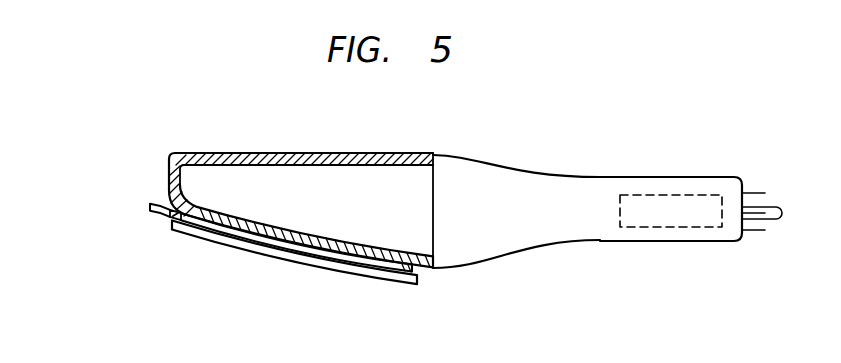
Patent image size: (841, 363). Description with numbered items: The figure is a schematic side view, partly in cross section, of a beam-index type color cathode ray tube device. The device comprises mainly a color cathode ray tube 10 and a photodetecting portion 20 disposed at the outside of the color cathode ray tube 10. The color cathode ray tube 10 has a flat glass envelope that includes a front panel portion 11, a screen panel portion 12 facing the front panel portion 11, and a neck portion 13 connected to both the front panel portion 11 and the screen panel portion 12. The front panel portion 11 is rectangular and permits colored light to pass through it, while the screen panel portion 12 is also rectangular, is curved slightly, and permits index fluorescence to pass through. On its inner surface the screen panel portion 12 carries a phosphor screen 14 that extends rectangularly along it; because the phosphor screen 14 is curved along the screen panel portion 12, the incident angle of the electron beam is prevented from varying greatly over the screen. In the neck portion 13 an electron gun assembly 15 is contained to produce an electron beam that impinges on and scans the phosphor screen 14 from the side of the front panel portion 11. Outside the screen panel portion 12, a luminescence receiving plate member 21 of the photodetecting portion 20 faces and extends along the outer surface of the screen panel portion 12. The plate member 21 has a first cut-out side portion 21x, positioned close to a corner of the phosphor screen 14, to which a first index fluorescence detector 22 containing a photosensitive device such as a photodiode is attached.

The color cathode ray tube 10 is at (545, 166).
The front panel portion 11 is at (370, 160).
The screen panel portion 12 is at (377, 269).
The neck portion 13 is at (555, 248).
The phosphor screen 14 is at (210, 214).
The electron gun assembly 15 is at (678, 228).
The photodetecting portion 20 is at (255, 241).
The luminescence receiving plate member 21 is at (238, 244).
The first cut-out side portion 21x is at (177, 226).
The first index fluorescence detector 22 is at (155, 208).